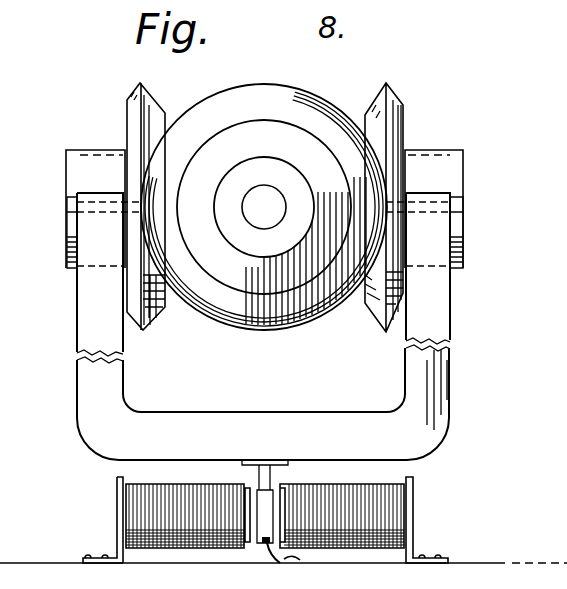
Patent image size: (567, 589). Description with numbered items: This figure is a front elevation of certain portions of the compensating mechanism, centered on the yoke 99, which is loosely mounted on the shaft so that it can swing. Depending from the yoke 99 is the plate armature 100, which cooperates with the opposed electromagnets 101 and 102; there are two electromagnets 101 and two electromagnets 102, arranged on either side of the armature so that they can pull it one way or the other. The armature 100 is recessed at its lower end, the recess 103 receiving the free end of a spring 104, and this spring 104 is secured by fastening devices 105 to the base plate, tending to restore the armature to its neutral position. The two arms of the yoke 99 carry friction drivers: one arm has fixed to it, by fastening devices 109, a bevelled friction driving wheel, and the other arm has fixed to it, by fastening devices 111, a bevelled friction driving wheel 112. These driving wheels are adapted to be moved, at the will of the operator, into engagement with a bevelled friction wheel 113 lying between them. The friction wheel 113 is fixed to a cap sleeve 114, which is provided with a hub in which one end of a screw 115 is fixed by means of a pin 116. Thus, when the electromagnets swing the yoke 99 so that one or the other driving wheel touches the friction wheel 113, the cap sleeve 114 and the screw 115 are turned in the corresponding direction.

The yoke 99 is at (110, 388).
The plate armature 100 is at (293, 467).
The electromagnet 101 is at (173, 548).
The electromagnet 102 is at (386, 550).
The recess 103 is at (256, 546).
The spring 104 is at (270, 556).
The fastening devices 105 is at (300, 560).
The fastening devices 109 is at (72, 205).
The fastening devices 111 is at (450, 203).
The bevelled friction driving wheel 112 is at (376, 125).
The bevelled friction wheel 113 is at (308, 312).
The cap sleeve 114 is at (291, 181).
The screw 115 is at (264, 207).
The pin 116 is at (128, 115).